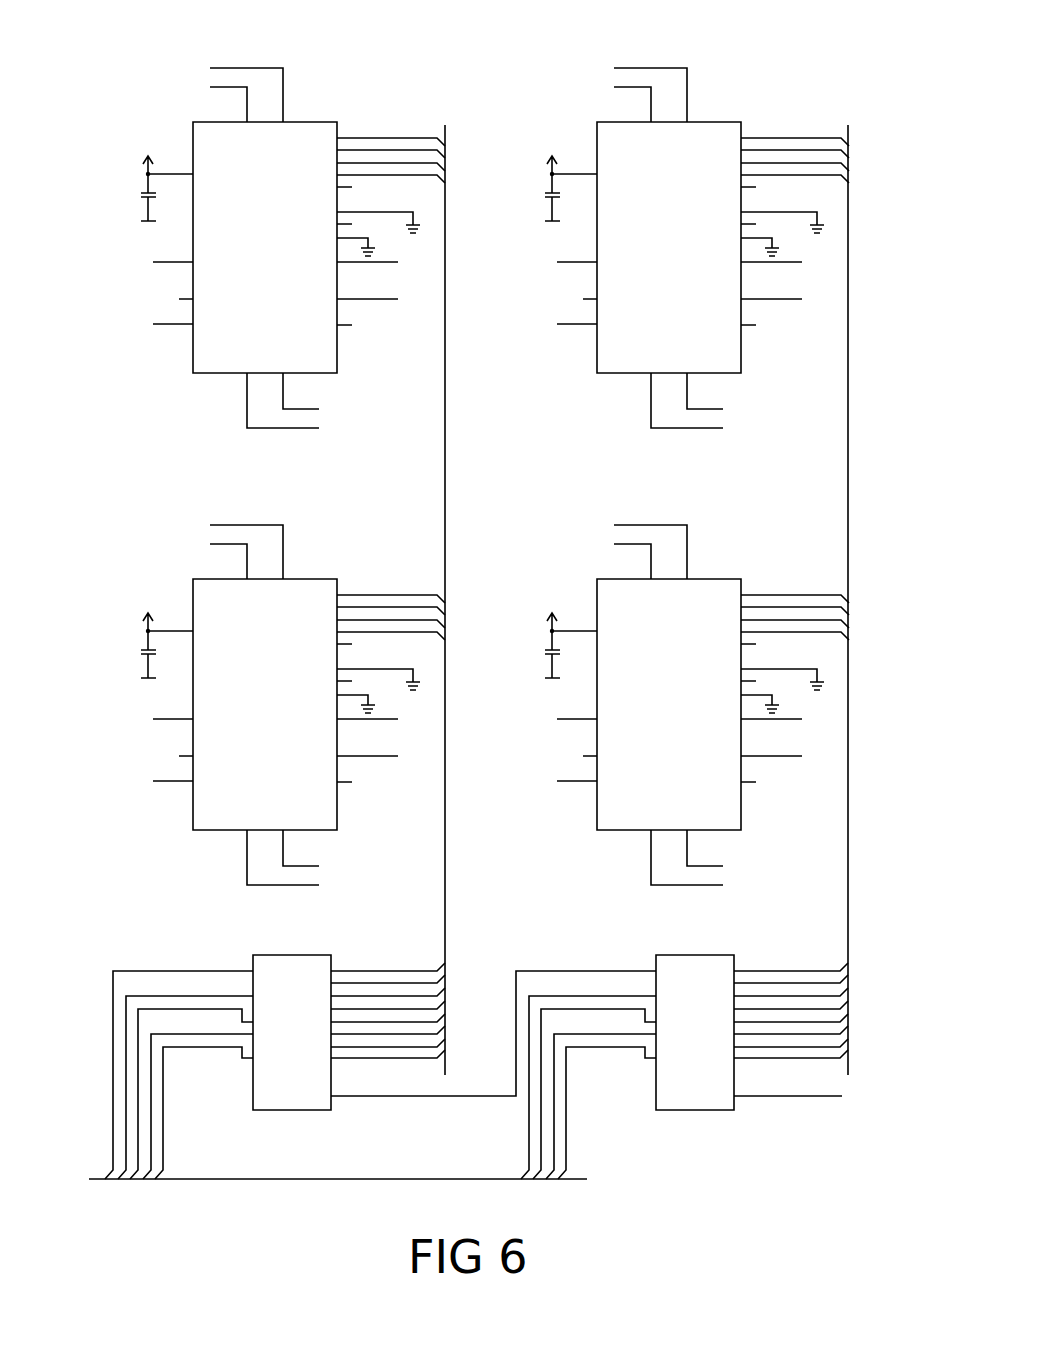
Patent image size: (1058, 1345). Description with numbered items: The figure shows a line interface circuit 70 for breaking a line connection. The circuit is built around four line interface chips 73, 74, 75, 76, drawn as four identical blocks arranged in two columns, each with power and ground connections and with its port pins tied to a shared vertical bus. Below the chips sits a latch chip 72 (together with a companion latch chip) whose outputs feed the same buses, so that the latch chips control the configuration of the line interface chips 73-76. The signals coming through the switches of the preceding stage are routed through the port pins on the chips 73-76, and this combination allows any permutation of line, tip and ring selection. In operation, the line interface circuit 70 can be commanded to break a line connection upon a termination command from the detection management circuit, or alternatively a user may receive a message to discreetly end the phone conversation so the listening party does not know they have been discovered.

The line interface circuit 70 is at (787, 91).
The latch chip 72 is at (706, 1120).
The line interface chip 73 is at (158, 249).
The line interface chip 74 is at (166, 742).
The line interface chip 75 is at (793, 237).
The line interface chip 76 is at (760, 790).